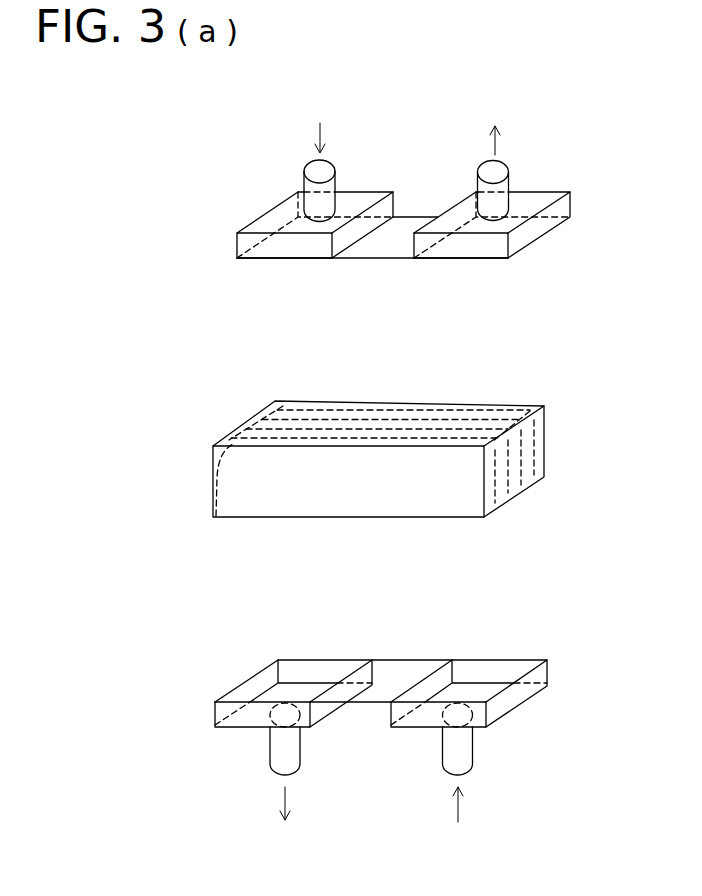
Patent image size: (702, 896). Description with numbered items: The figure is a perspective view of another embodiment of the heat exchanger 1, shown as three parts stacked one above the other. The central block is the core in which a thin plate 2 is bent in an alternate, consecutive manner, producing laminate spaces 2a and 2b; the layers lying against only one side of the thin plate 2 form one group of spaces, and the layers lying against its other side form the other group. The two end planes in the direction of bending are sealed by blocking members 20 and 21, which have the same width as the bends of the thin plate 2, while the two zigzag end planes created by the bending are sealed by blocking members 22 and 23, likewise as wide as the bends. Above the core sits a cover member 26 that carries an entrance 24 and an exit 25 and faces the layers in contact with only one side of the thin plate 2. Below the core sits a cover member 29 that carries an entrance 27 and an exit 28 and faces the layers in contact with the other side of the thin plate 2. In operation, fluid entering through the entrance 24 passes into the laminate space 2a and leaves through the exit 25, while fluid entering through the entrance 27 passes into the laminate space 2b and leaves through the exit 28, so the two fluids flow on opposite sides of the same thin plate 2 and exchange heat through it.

The heat exchanger 1 is at (123, 334).
The thin plate 2 is at (503, 407).
The laminate space 2a is at (548, 418).
The laminate space 2b is at (524, 470).
The blocking member 20 is at (301, 519).
The blocking member 21 is at (413, 403).
The blocking member 22 is at (247, 420).
The blocking member 23 is at (546, 416).
The entrance 24 is at (308, 169).
The exit 25 is at (503, 166).
The cover member 26 is at (407, 222).
The entrance 27 is at (464, 765).
The exit 28 is at (278, 752).
The cover member 29 is at (413, 672).